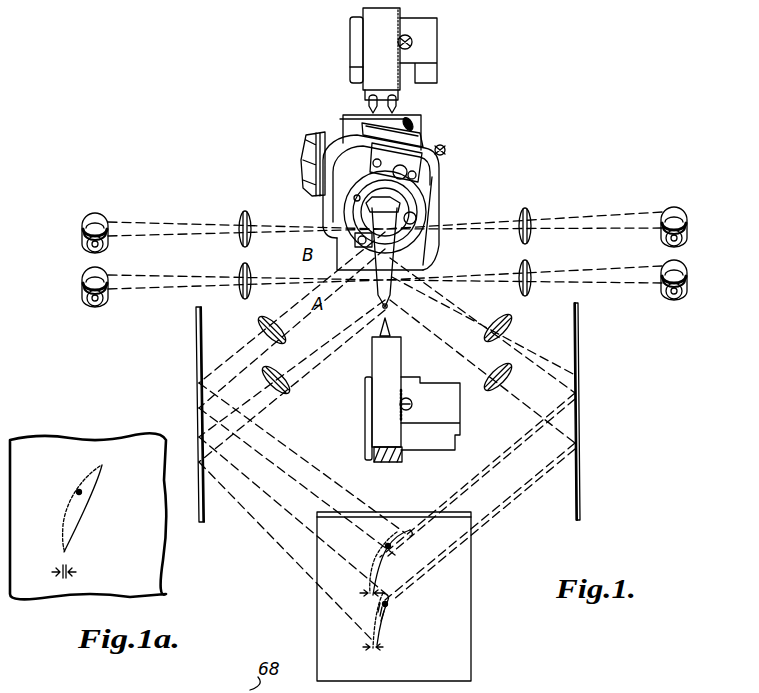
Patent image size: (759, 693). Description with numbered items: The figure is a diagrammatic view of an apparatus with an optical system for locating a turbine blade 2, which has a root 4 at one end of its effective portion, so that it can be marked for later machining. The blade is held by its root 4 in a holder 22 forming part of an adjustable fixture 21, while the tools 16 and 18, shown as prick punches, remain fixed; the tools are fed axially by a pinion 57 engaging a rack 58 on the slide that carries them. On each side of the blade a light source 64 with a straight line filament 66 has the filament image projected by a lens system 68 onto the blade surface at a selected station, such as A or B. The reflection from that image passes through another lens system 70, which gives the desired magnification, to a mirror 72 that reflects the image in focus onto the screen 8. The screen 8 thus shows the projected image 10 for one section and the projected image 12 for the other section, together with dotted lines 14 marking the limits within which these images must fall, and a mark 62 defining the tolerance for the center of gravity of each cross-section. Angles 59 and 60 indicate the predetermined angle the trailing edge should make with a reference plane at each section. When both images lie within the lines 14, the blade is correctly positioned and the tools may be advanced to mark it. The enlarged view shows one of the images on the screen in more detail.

In FIG. 1, the turbine blade 2 is at (390, 252).
In FIG. 1, the root 4 is at (402, 201).
In FIG. 1, the screen 8 is at (470, 612).
In FIG. 1A, the screen 8 is at (160, 561).
In FIG. 1, the projected image 10 is at (390, 594).
In FIG. 1A, the projected image 10 is at (82, 485).
In FIG. 1, the projected image 12 is at (410, 531).
In FIG. 1, the dotted lines 14 is at (375, 550).
In FIG. 1A, the dotted lines 14 is at (97, 480).
In FIG. 1, the tool 16 is at (378, 331).
In FIG. 1, the tool 18 is at (398, 108).
In FIG. 1, the fixture 21 is at (338, 133).
In FIG. 1, the holder 22 is at (353, 207).
In FIG. 1, the pinion 57 is at (412, 40).
In FIG. 1, the rack 58 is at (398, 28).
In FIG. 1, the angle 59 is at (374, 650).
In FIG. 1A, the angle 59 is at (67, 555).
In FIG. 1, the angle 60 is at (370, 596).
In FIG. 1, the mark 62 is at (389, 546).
In FIG. 1A, the mark 62 is at (82, 494).
In FIG. 1, the light source 64 is at (100, 217).
In FIG. 1, the straight line filament 66 is at (82, 236).
In FIG. 1, the lens system 68 is at (243, 212).
In FIG. 1, the lens system 70 is at (258, 332).
In FIG. 1, the mirror 72 is at (196, 340).